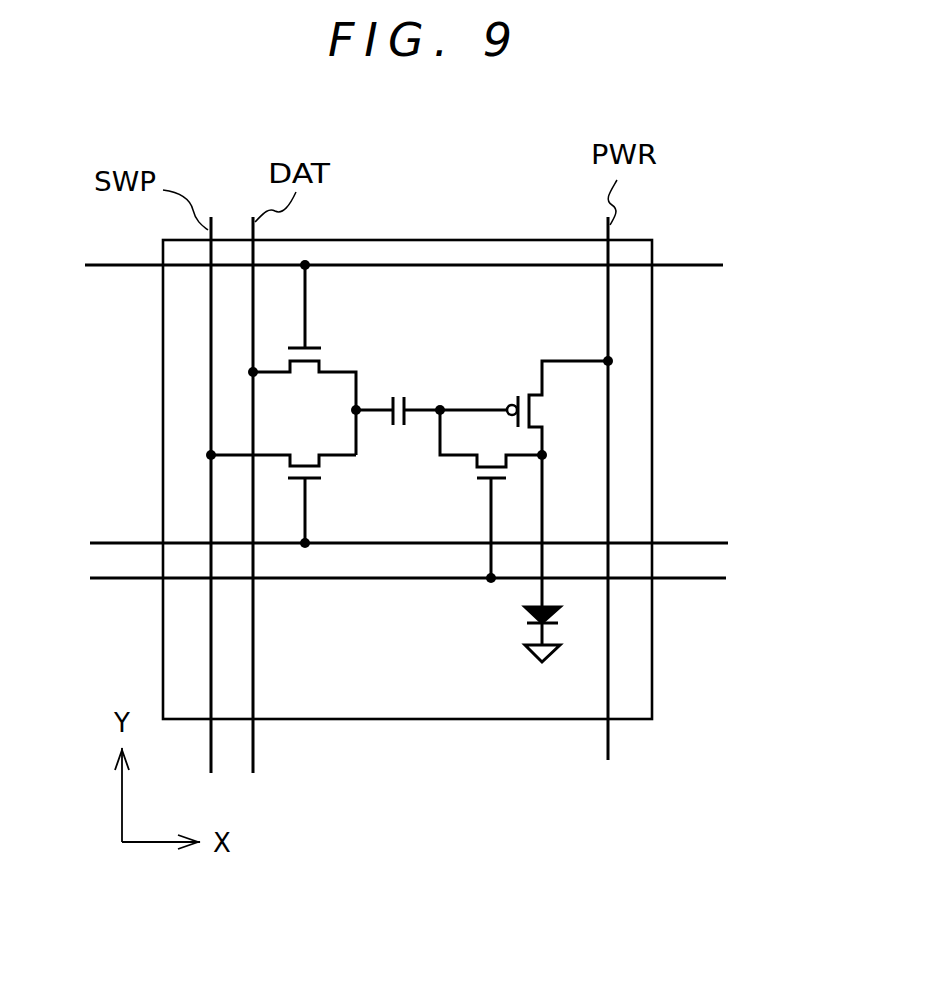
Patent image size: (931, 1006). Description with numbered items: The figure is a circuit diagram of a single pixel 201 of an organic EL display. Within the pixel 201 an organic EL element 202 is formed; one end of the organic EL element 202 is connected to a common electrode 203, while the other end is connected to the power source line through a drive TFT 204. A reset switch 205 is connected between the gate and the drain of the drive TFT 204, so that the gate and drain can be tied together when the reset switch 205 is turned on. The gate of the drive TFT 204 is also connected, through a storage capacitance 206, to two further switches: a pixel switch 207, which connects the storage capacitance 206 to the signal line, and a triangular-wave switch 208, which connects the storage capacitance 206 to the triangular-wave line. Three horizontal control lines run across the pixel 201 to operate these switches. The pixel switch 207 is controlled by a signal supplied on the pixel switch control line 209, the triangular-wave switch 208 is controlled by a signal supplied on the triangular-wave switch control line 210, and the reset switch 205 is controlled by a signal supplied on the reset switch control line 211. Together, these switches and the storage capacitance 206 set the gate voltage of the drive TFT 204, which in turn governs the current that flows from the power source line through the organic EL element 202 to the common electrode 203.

The pixel 201 is at (433, 241).
The organic EL element 202 is at (526, 622).
The common electrode 203 is at (536, 663).
The drive TFT 204 is at (546, 421).
The reset switch 205 is at (472, 478).
The storage capacitance 206 is at (402, 390).
The pixel switch 207 is at (327, 354).
The triangular-wave switch 208 is at (327, 478).
The pixel switch control line 209 is at (706, 265).
The triangular-wave switch control line 210 is at (702, 542).
The reset switch control line 211 is at (700, 580).